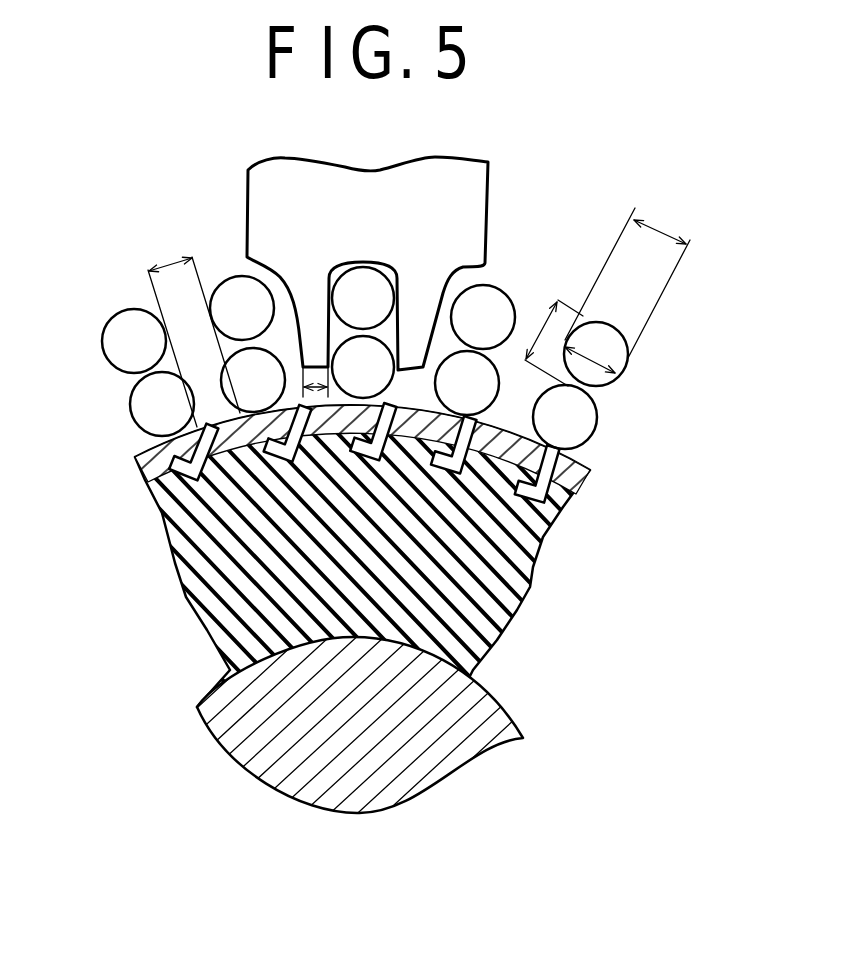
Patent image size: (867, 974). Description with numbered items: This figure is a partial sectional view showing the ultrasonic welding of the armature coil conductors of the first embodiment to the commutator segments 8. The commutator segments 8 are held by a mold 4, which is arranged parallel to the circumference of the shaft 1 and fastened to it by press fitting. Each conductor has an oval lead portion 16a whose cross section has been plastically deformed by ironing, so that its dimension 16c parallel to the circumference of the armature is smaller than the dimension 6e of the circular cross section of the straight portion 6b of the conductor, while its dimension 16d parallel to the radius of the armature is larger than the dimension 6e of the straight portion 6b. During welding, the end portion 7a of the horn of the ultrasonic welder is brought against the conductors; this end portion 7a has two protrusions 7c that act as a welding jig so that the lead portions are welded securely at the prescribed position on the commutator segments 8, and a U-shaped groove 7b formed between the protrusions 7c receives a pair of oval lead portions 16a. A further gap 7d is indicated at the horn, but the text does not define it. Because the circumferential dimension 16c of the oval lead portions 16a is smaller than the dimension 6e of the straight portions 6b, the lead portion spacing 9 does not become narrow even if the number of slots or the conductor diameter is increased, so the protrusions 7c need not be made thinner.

The shaft 1 is at (210, 713).
The mold 4 is at (429, 570).
The commutator segments 8 is at (160, 462).
The lead portion spacing 9 is at (172, 258).
The end portion of the horn 7a is at (257, 188).
The U-shaped groove 7b is at (352, 282).
The protrusions 7c is at (413, 347).
The holder gap 7d is at (300, 353).
The oval lead portions 16a is at (606, 333).
The dimension of oval lead portion parallel to armature circumference 16c is at (594, 326).
The dimension of oval lead portion parallel to armature radius 16d is at (548, 324).
The dimension of straight portion 6e is at (655, 225).
The straight portions 6b is at (625, 365).